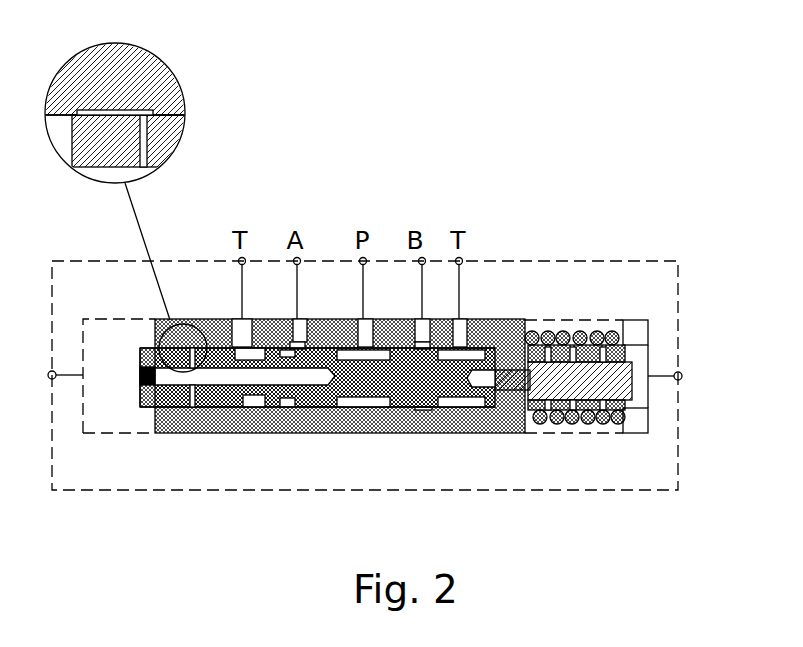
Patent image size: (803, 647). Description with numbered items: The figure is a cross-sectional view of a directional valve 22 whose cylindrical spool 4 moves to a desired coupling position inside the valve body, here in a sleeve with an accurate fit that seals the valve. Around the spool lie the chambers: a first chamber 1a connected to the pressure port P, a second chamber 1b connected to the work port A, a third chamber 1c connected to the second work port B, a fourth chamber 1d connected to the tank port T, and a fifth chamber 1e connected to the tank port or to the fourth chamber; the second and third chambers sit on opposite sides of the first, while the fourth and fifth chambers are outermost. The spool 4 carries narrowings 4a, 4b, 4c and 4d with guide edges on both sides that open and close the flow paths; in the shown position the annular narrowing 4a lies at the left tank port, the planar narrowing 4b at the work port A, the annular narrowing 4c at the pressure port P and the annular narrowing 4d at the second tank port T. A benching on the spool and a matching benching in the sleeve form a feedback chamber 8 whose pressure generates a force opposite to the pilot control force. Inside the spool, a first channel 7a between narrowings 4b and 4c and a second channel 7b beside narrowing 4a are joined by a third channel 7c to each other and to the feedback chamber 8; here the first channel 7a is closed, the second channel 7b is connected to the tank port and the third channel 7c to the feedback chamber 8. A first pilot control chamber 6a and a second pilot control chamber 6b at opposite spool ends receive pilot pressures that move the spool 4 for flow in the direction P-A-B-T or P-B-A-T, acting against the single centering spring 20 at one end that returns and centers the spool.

The first chamber 1a is at (343, 352).
The second chamber 1b is at (293, 345).
The third chamber 1c is at (427, 345).
The fourth chamber 1d is at (472, 353).
The fifth chamber 1e is at (228, 340).
The spool 4 is at (175, 125).
The narrowing 4a is at (246, 395).
The narrowing 4b is at (299, 398).
The narrowing 4c is at (363, 397).
The fourth narrowing 4d is at (466, 397).
The first pilot control chamber 6a is at (638, 345).
The second pilot control chamber 6b is at (122, 345).
The first channel 7a is at (333, 365).
The second channel 7b is at (215, 377).
The third channel 7c is at (128, 173).
The feedback chamber 8 is at (110, 112).
The spring 20 is at (583, 333).
The valve 22 is at (115, 492).